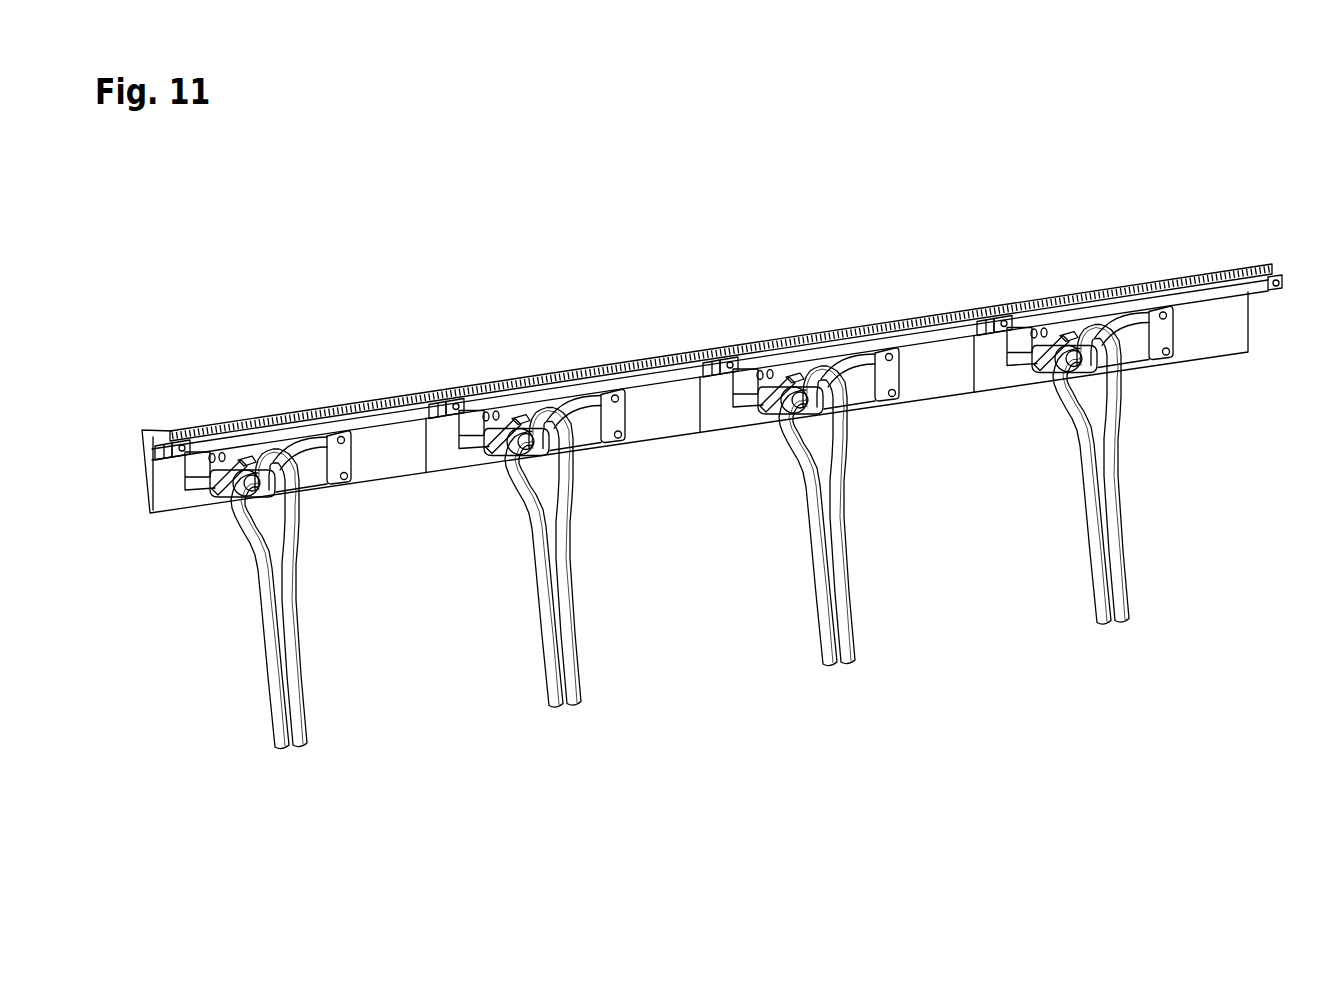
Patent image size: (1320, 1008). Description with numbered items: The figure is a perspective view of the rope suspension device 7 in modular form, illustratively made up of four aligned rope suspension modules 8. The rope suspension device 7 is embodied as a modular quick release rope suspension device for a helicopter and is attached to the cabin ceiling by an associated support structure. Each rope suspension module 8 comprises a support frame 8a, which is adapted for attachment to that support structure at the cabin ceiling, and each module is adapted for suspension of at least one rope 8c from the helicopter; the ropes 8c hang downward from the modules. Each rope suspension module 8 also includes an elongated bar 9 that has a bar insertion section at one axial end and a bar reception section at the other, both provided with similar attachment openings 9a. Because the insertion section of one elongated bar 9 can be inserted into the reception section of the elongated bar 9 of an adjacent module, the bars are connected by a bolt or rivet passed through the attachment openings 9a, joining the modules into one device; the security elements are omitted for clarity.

The rope suspension device 7 is at (210, 288).
The rope suspension module 8 is at (302, 390).
The support frame 8a is at (170, 497).
The rope 8c is at (293, 772).
The elongated bar 9 is at (358, 428).
The attachment openings 9a is at (461, 403).